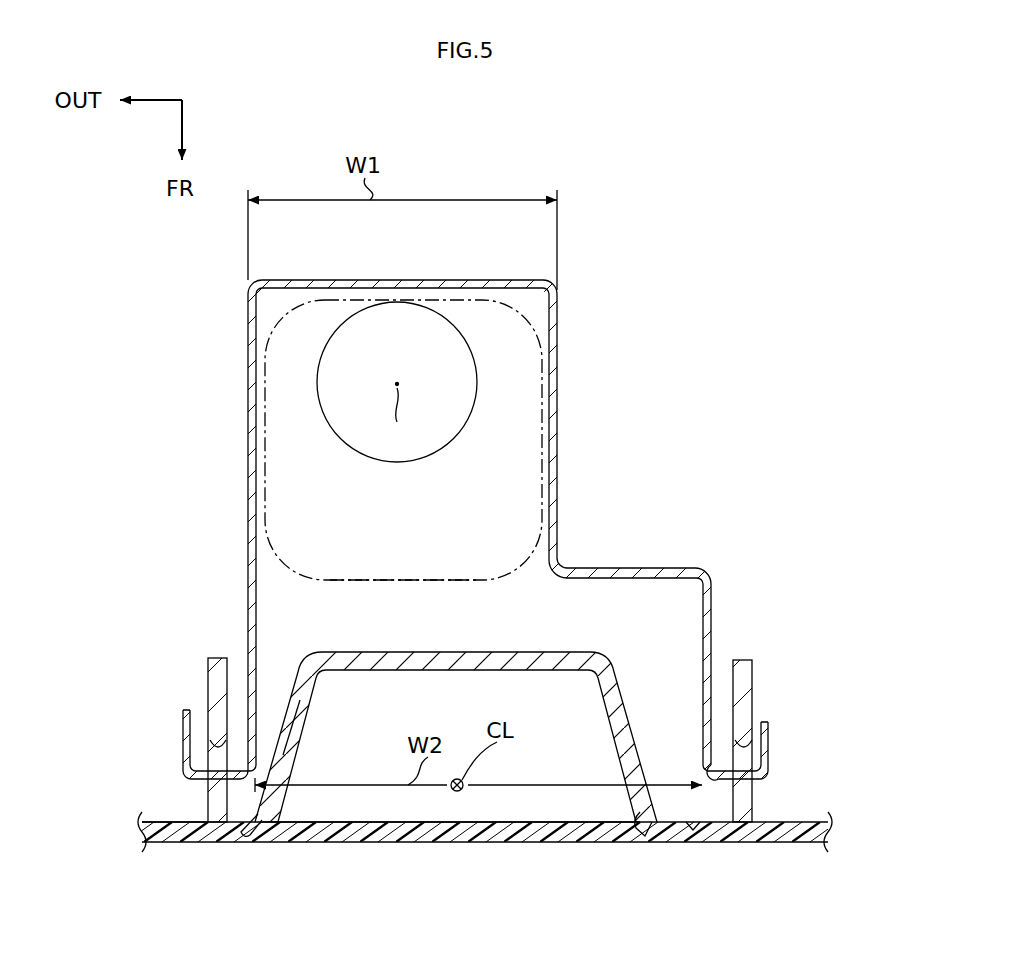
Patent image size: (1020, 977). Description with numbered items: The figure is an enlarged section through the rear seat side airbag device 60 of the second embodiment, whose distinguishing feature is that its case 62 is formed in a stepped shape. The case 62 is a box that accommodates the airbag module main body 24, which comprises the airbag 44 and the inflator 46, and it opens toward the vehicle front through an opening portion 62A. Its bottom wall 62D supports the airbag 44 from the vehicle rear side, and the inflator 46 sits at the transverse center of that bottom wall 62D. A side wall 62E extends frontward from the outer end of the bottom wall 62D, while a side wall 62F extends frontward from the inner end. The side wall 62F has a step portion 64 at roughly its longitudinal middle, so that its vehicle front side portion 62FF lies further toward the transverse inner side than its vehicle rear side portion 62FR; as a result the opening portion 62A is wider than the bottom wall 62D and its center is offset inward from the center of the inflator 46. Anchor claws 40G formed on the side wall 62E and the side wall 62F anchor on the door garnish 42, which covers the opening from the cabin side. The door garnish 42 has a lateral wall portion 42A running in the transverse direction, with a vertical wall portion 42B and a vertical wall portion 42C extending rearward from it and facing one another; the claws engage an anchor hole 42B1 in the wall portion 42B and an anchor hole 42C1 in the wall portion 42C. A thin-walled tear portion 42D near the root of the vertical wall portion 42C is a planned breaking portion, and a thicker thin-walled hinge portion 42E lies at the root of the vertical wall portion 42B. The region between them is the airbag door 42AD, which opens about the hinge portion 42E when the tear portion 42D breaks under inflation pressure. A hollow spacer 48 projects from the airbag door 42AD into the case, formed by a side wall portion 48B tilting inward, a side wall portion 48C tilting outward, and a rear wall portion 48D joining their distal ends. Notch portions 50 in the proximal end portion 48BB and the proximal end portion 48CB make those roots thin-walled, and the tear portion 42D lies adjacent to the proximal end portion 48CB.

The rear seat side airbag device 60 is at (728, 320).
The case 62 is at (548, 275).
The bottom wall 62D is at (402, 280).
The side wall 62E is at (248, 452).
The side wall 62F is at (558, 458).
The vehicle rear side portion 62FR is at (558, 392).
The vehicle front side portion 62FF is at (713, 588).
The opening portion 62A is at (704, 738).
The step portion 64 is at (667, 560).
The airbag module main body 24 is at (534, 330).
The airbag 44 is at (532, 585).
The inflator 46 is at (383, 462).
The spacer 48 is at (447, 650).
The side wall portion 48B is at (292, 700).
The side wall portion 48C is at (636, 740).
The rear wall portion 48D is at (378, 653).
The proximal end portion 48BB is at (283, 828).
The proximal end portion 48CB is at (648, 840).
The door garnish 42 is at (787, 845).
The lateral wall portion 42A is at (172, 843).
The airbag door 42AD is at (442, 843).
The vertical wall portion 42B is at (210, 659).
The anchor hole 42B1 is at (213, 745).
The vertical wall portion 42C is at (753, 660).
The anchor hole 42C1 is at (752, 742).
The tear portion 42D is at (694, 830).
The hinge portion 42E is at (283, 755).
The anchor claw 40G is at (183, 732).
The notch portion 50 is at (268, 790).